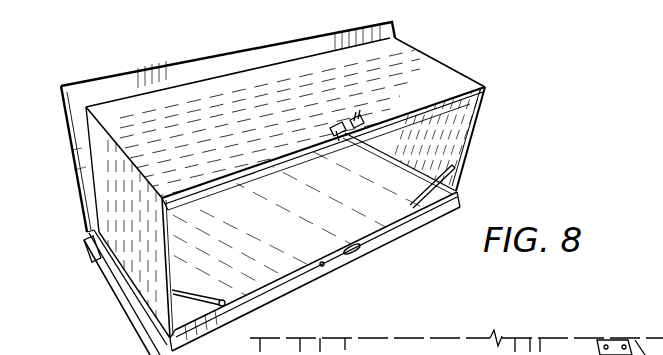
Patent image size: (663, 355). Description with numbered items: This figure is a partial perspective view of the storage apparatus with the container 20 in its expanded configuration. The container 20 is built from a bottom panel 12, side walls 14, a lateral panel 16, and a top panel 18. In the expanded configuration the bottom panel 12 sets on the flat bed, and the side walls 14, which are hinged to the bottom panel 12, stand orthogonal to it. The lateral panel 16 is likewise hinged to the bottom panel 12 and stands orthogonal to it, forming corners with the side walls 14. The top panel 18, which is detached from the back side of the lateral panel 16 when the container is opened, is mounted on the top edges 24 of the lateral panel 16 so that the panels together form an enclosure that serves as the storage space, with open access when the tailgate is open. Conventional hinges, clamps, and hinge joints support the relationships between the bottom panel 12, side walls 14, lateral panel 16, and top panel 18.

The bottom panel 12 is at (375, 222).
The side walls 14 is at (110, 216).
The lateral panel 16 is at (82, 147).
The top panel 18 is at (430, 65).
The container 20 is at (84, 66).
The top edges 24 is at (478, 108).